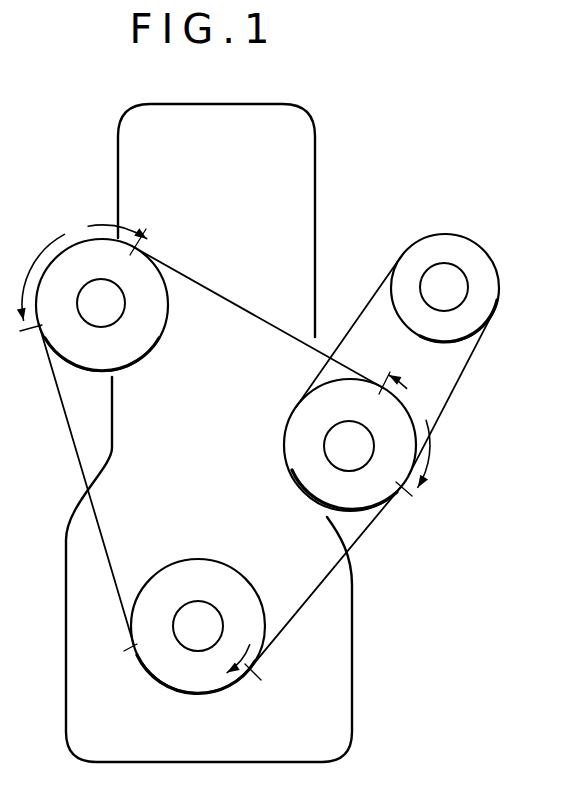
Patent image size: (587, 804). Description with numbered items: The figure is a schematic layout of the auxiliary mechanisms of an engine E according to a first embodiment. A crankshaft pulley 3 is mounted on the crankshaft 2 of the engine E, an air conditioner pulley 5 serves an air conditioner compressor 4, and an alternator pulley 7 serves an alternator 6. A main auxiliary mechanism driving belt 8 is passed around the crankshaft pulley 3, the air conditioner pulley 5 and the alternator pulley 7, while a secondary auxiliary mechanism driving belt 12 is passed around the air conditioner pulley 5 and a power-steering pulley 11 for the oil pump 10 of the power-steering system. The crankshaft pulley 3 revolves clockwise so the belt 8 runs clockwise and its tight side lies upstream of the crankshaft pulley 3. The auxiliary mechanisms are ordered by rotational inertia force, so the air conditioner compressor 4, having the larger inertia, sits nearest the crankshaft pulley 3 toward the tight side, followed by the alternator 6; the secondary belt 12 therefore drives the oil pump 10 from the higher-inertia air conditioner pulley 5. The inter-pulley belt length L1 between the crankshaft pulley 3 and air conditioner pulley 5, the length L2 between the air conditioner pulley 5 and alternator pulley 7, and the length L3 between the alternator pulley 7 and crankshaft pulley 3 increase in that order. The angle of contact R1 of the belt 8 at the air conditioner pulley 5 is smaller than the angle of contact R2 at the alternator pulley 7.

The engine E is at (326, 159).
The crankshaft 2 is at (195, 640).
The crankshaft pulley 3 is at (255, 597).
The air conditioner compressor 4 is at (337, 435).
The air conditioner pulley 5 is at (292, 458).
The alternator 6 is at (117, 300).
The alternator pulley 7 is at (163, 331).
The main auxiliary mechanism driving belt 8 is at (262, 319).
The oil pump 10 is at (453, 292).
The power-steering pulley 11 is at (478, 265).
The secondary auxiliary mechanism driving belt 12 is at (463, 372).
The inter-pulley belt length L1 is at (323, 612).
The inter-pulley belt length L2 is at (237, 285).
The inter-pulley belt length L3 is at (58, 451).
The angle of contact R1 is at (412, 431).
The angle of contact R2 is at (82, 272).